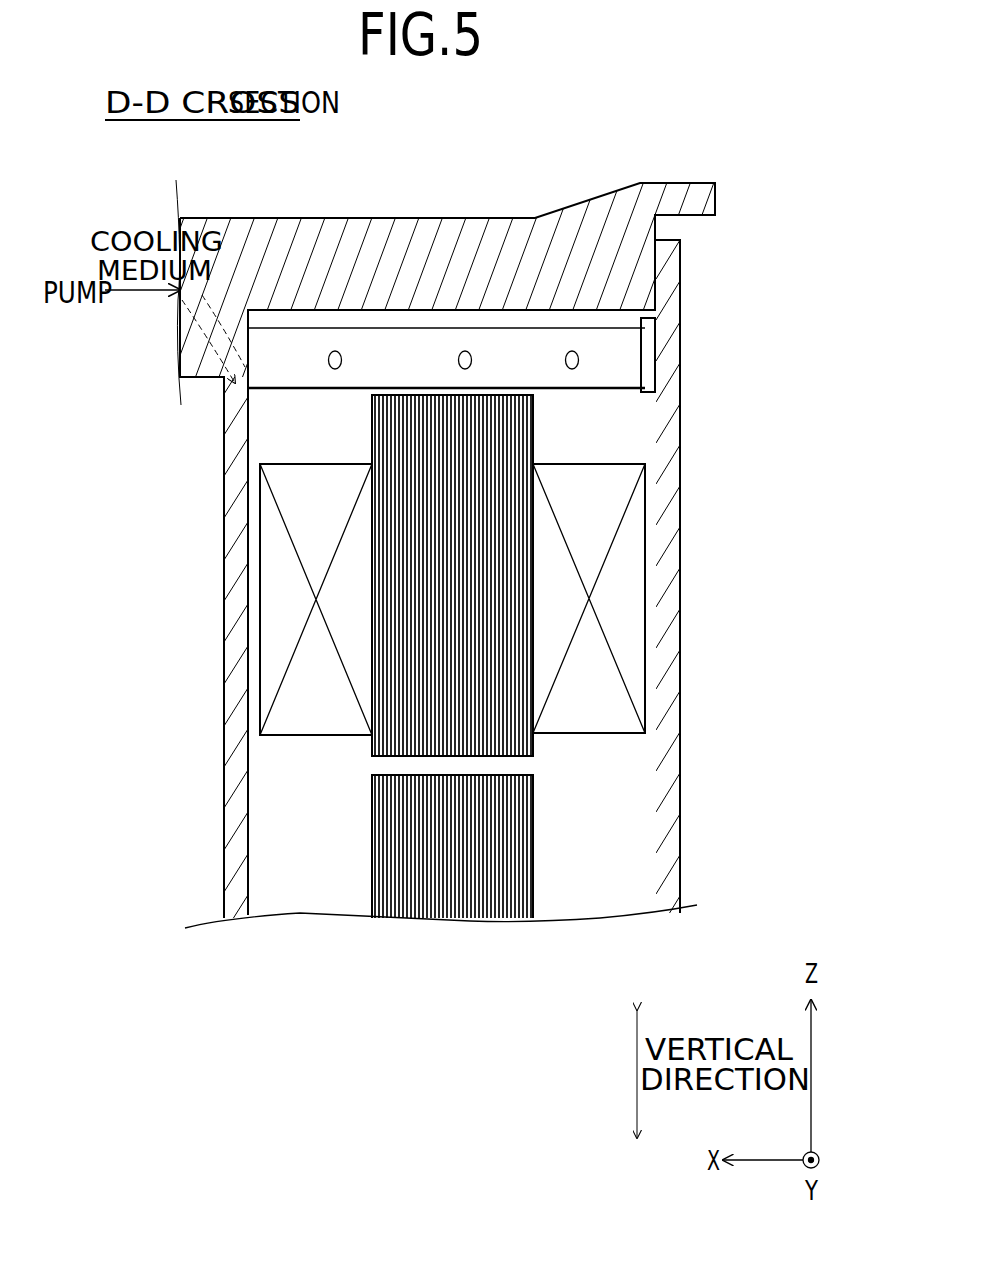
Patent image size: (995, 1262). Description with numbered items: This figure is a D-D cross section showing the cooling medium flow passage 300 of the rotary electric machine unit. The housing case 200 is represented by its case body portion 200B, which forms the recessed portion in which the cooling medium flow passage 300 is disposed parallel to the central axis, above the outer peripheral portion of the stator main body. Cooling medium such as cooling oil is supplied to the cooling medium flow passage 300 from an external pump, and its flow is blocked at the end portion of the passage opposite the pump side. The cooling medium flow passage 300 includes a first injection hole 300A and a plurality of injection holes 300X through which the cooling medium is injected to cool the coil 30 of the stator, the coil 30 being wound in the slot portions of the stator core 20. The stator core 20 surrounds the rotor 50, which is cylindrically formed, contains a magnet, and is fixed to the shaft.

The case body portion 200B is at (232, 912).
The housing case 200 is at (234, 728).
The cooling medium flow passage 300 is at (380, 345).
The injection holes 300X is at (335, 350).
The first injection hole 300A is at (465, 350).
The coil 30 is at (302, 717).
The stator core 20 is at (400, 740).
The rotor 50 is at (408, 920).